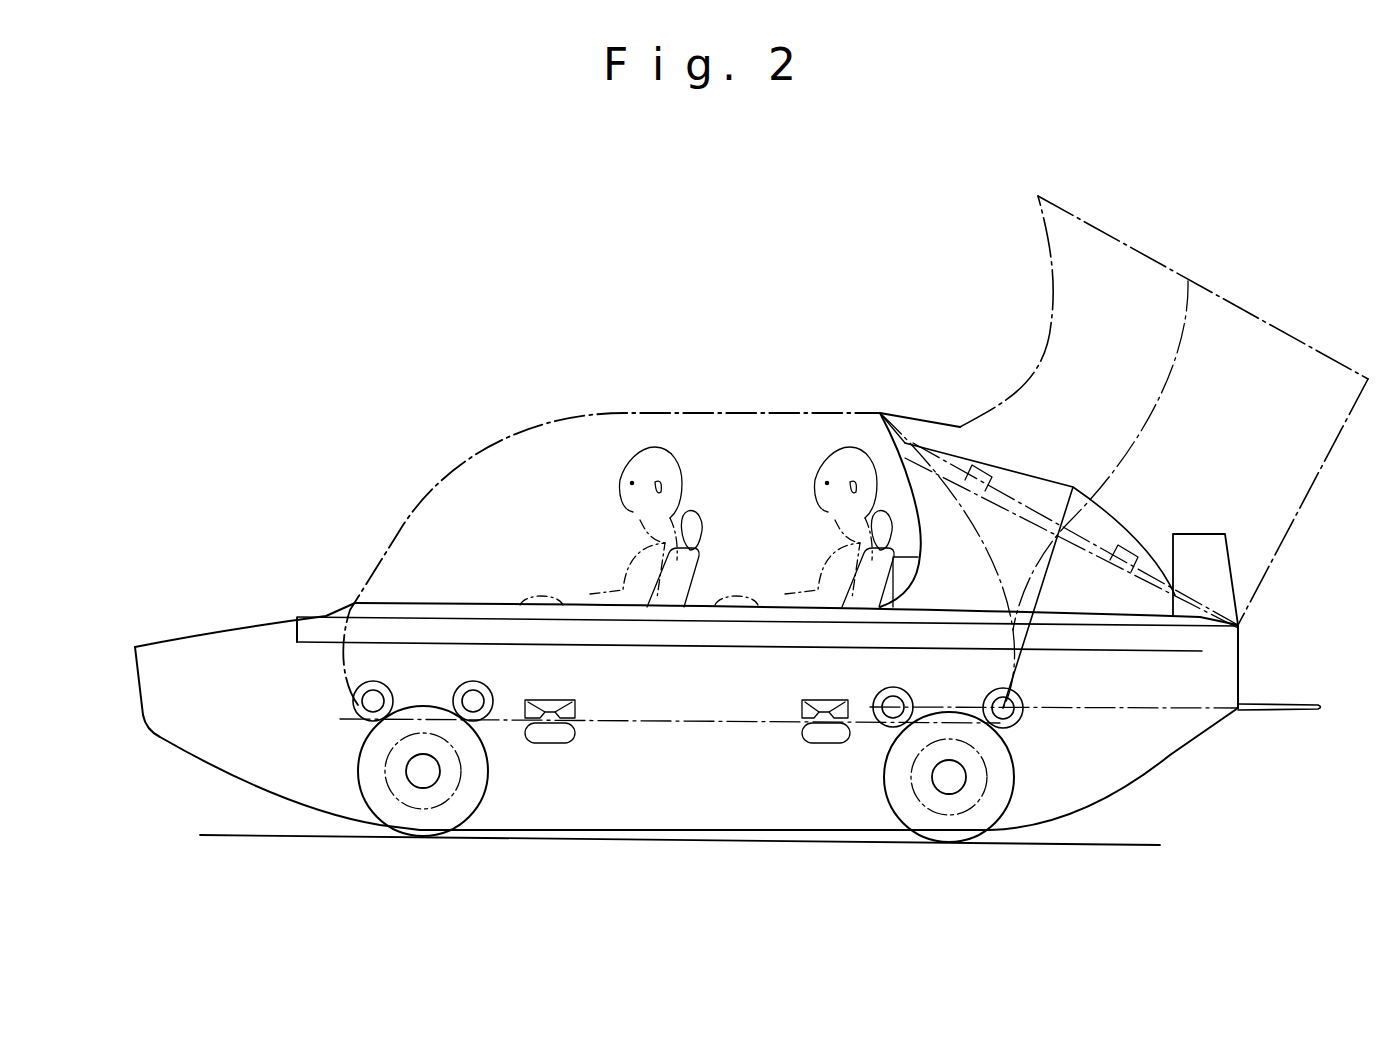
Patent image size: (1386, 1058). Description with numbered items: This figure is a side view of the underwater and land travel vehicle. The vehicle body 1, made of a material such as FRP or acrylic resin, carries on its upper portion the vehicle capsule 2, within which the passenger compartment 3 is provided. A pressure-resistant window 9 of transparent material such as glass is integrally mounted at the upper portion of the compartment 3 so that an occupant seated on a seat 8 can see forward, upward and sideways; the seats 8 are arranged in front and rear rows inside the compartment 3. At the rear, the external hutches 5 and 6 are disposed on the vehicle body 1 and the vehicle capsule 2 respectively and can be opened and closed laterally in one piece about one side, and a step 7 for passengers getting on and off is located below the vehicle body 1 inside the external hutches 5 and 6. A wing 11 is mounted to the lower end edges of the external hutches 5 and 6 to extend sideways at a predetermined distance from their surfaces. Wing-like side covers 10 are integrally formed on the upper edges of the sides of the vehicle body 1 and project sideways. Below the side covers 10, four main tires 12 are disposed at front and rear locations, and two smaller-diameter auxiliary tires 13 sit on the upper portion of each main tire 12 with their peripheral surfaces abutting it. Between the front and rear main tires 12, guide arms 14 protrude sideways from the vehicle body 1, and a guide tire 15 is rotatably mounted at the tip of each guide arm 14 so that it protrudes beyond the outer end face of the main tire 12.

The vehicle body 1 is at (249, 627).
The vehicle capsule 2 is at (895, 418).
The passenger compartment 3 is at (765, 437).
The external hutch 5 is at (1249, 324).
The external hutch 6 is at (1123, 259).
The step 7 is at (1203, 708).
The seat 8 is at (702, 553).
The window 9 is at (652, 412).
The side cover 10 is at (650, 640).
The wing 11 is at (1202, 545).
The main tire 12 is at (436, 832).
The auxiliary tire 13 is at (358, 713).
The guide arm 14 is at (576, 706).
The guide tire 15 is at (546, 746).